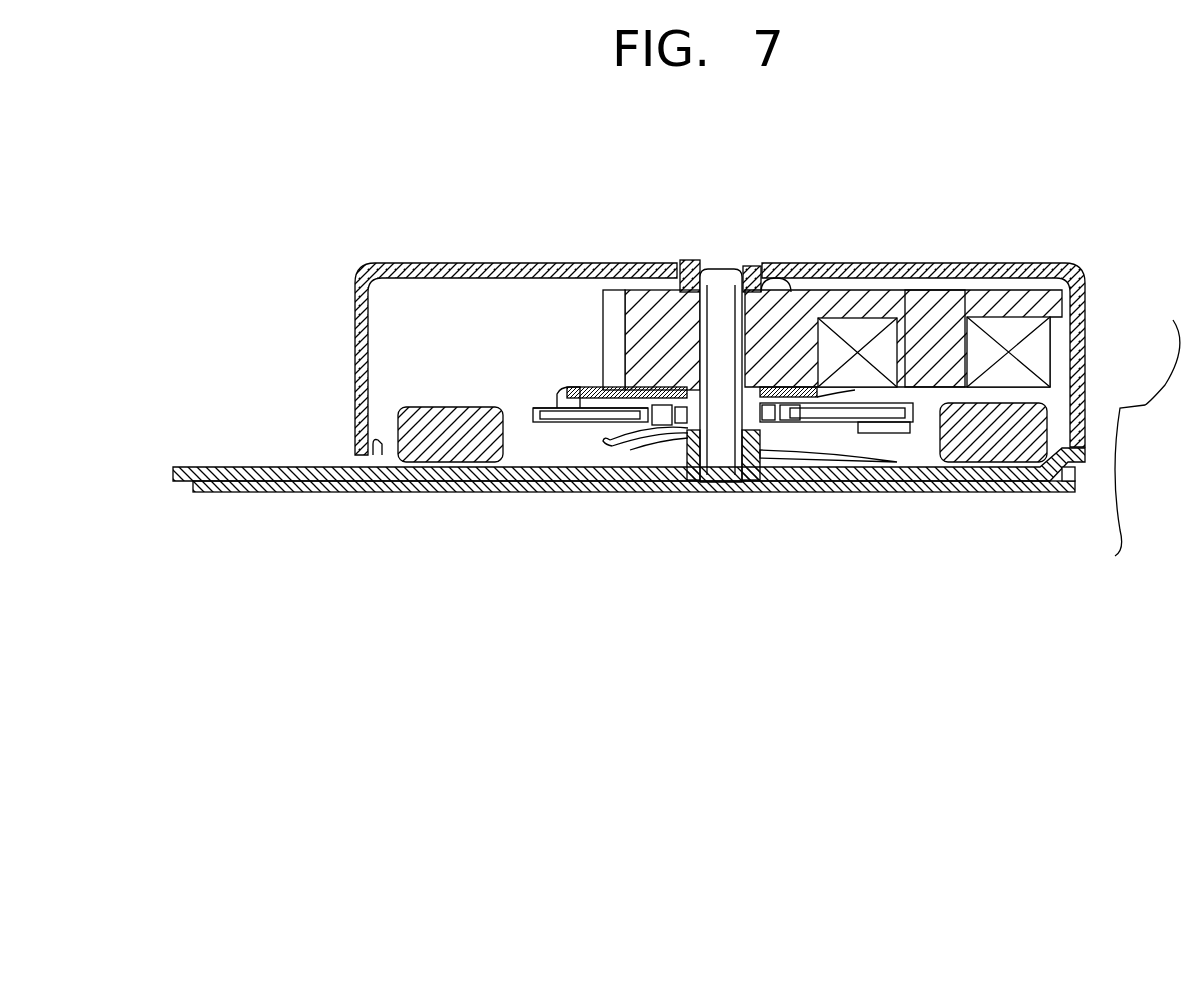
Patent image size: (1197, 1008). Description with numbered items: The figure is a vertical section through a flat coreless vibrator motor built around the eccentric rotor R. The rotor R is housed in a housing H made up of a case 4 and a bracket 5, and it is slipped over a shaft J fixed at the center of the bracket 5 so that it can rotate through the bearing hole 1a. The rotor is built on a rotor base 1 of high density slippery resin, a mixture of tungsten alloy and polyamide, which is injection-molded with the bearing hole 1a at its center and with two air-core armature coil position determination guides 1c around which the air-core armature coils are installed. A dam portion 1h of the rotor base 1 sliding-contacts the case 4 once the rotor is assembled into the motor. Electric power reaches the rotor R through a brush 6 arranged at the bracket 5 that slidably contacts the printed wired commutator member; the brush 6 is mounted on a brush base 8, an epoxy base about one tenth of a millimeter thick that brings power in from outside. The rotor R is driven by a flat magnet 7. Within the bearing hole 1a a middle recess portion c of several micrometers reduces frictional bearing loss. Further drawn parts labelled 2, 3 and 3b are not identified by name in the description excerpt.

The rotor base 1 is at (1002, 303).
The bearing hole 1a is at (688, 292).
The air-core armature coil position determination guide 1c is at (940, 353).
The dam portion 1h is at (780, 284).
The coil 2 is at (1037, 355).
The bracket 3 is at (560, 490).
The bracket plate 3b is at (537, 390).
The case 4 is at (1088, 281).
The bracket 5 is at (1027, 490).
The brush 6 is at (647, 488).
The flat magnet 7 is at (453, 427).
The brush base 8 is at (258, 467).
The shaft J is at (724, 262).
The eccentric rotor R is at (587, 338).
The middle recess portion c is at (543, 400).
The housing H is at (1165, 457).